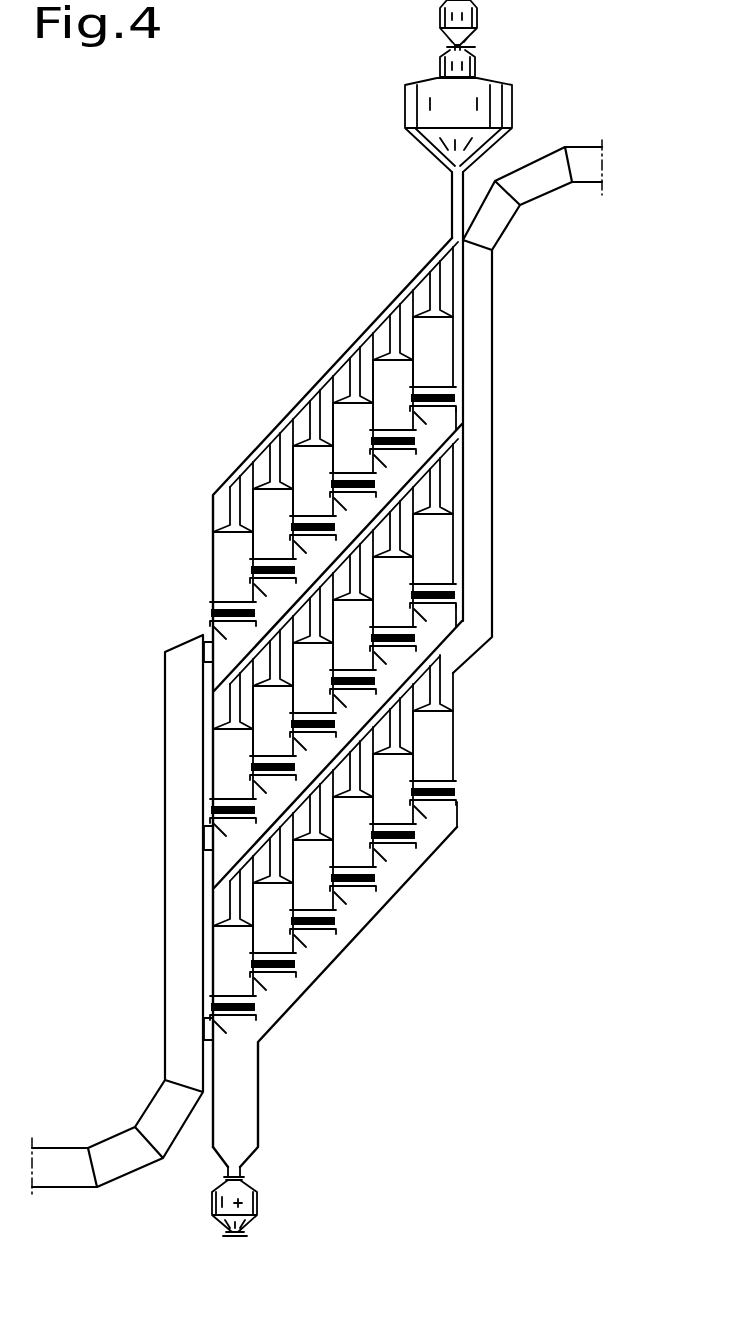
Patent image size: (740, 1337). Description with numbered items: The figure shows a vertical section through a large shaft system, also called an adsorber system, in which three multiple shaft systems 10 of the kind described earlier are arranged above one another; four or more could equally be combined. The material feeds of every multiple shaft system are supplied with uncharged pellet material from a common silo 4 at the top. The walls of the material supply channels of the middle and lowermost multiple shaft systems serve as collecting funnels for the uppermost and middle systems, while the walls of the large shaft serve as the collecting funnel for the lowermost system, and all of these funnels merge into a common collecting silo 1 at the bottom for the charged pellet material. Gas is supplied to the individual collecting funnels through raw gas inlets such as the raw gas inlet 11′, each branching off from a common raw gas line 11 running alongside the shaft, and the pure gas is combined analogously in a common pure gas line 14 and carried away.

The common collecting silo 1 is at (237, 1203).
The common silo 4 is at (487, 105).
The cyclone separator stages 10 is at (202, 552).
The common raw gas line 11 is at (187, 970).
The raw gas inlet 11′ is at (203, 645).
The common pure gas line 14 is at (530, 182).